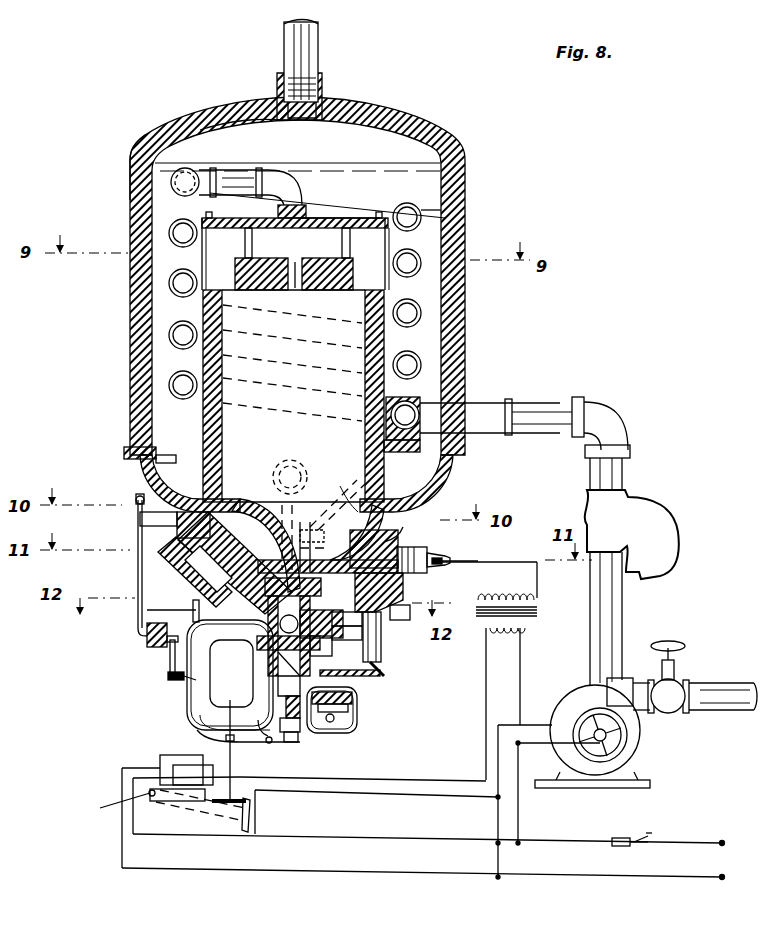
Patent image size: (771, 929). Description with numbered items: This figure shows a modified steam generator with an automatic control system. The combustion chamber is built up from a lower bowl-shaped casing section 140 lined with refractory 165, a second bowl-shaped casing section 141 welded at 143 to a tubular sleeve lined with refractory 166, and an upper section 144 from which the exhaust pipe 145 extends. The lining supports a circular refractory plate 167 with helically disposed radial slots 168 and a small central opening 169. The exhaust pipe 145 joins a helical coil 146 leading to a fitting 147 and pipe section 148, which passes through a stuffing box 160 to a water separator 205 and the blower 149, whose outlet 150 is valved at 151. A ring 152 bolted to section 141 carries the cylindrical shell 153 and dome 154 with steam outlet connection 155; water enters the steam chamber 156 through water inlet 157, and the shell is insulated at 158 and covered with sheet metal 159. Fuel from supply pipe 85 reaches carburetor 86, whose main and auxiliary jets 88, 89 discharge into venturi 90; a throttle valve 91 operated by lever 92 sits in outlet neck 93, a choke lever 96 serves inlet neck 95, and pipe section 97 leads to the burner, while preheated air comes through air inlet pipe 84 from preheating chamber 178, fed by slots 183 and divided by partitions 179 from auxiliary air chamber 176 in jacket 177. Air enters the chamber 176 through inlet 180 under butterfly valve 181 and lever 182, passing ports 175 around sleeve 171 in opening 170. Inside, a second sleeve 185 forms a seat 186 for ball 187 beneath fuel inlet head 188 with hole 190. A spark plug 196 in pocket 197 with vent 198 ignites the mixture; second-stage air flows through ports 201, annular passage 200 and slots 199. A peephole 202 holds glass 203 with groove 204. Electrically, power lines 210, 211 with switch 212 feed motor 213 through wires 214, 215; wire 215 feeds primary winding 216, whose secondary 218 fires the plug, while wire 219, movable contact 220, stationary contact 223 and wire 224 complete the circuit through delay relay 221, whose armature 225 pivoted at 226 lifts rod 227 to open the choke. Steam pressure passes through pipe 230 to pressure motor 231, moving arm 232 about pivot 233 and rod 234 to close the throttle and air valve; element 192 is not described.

The insulation 158 is at (455, 175).
The sheet metal 159 is at (133, 176).
The dome 154 is at (215, 118).
The ring 152 is at (124, 453).
The weld 143 is at (190, 478).
The second bowl-shaped casing section 141 is at (432, 505).
The steam outlet connection 155 is at (322, 88).
The exhaust pipe 145 is at (288, 192).
The upper section 144 is at (342, 222).
The refractory lining 166 is at (214, 440).
The central opening 169 is at (281, 290).
The radial slots 168 is at (229, 306).
The circular plate 167 is at (326, 296).
The cylindrical shell 153 is at (155, 348).
The steam chamber 156 is at (425, 330).
The helical coil 146 is at (448, 216).
The stuffing box 160 is at (455, 400).
The fitting 147 is at (430, 396).
The pipe section 148 is at (560, 400).
The water separator 205 is at (672, 540).
The blower 149 is at (612, 755).
The motor 213 is at (608, 742).
The valve 151 is at (665, 706).
The outlet 150 is at (720, 690).
The secondary winding 218 is at (488, 581).
The wire 214 is at (540, 615).
The primary winding 216 is at (503, 632).
The wire 215 is at (540, 745).
The wire 219 is at (440, 793).
The power line 210 is at (429, 794).
The power line 211 is at (423, 868).
The start and stop switch 212 is at (630, 832).
The wire 224 is at (388, 797).
The delay relay 221 is at (158, 760).
The armature 225 is at (182, 805).
The pivot 226 is at (114, 807).
The stationary contact 223 is at (250, 822).
The movable contact 220 is at (250, 801).
The rod 227 is at (230, 746).
The refractory lining 165 is at (270, 530).
The bracket 192 is at (192, 462).
The water inlet 157 is at (298, 465).
The slots 199 is at (346, 489).
The slots 183 is at (337, 505).
The annular passage 200 is at (386, 525).
The ports 201 is at (400, 532).
The fuel inlet head 188 is at (282, 540).
The hole 190 is at (326, 540).
The opening 170 is at (319, 549).
The ports 175 is at (322, 588).
The auxiliary air inlet chamber 176 is at (379, 592).
The pocket 197 is at (420, 548).
The spark plug 196 is at (447, 557).
The vent 198 is at (410, 570).
The lower bowl-shaped casing section 140 is at (172, 533).
The groove 204 is at (130, 548).
The pipe 230 is at (136, 497).
The partitions 179 is at (235, 580).
The peephole 202 is at (170, 580).
The block of glass 203 is at (190, 580).
The pivot 233 is at (147, 610).
The pressure motor 231 is at (147, 640).
The primary air inlet preheating chamber 178 is at (168, 650).
The arm 232 is at (168, 676).
The rod 234 is at (184, 678).
The ball 187 is at (282, 622).
The butterfly throttle valve 91 is at (268, 654).
The lever 92 is at (270, 670).
The outlet neck 93 is at (321, 660).
The venturi 90 is at (278, 690).
The sleeve 171 is at (330, 624).
The second sleeve 185 is at (330, 638).
The internal seat 186 is at (351, 645).
The inlet 180 is at (372, 645).
The jacket 177 is at (413, 617).
The butterfly valve 181 is at (382, 668).
The lever 182 is at (380, 678).
The air inlet pipe 84 is at (190, 712).
The inlet neck 95 is at (195, 700).
The lever 96 is at (234, 725).
The carburetor 86 is at (350, 734).
The fuel supply pipe 85 is at (400, 710).
The auxiliary jet 89 is at (300, 735).
The main jet 88 is at (283, 740).
The pipe section 97 is at (268, 742).